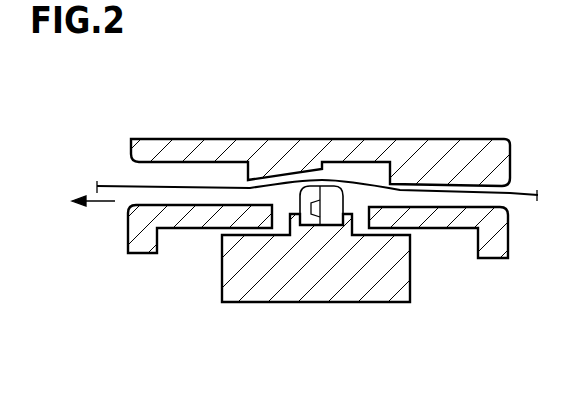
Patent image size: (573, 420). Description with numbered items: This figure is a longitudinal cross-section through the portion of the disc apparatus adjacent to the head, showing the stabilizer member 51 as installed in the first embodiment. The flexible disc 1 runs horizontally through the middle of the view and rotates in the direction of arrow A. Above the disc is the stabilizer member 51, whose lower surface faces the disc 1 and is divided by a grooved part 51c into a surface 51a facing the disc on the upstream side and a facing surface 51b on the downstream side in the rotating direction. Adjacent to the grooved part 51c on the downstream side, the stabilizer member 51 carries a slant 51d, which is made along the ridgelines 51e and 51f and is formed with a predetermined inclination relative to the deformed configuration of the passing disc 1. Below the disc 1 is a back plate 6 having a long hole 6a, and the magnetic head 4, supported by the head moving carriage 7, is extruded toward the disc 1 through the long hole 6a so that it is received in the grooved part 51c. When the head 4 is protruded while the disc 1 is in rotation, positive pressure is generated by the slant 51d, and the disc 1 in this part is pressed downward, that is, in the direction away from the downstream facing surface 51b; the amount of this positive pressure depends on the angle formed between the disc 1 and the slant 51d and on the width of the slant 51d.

The flexible disc 1 is at (523, 197).
The magnetic head 4 is at (332, 218).
The back plate 6 is at (138, 247).
The long hole 6a is at (282, 217).
The head moving carriage 7 is at (390, 287).
The stabilizer member 51 is at (405, 146).
The upstream side facing surface 51a is at (463, 173).
The downstream side facing surface 51b is at (185, 160).
The grooved part 51c is at (365, 162).
The slant face 51d is at (282, 172).
The ridgeline 51e is at (318, 168).
The ridgeline 51f is at (245, 178).
The arrow A is at (93, 209).